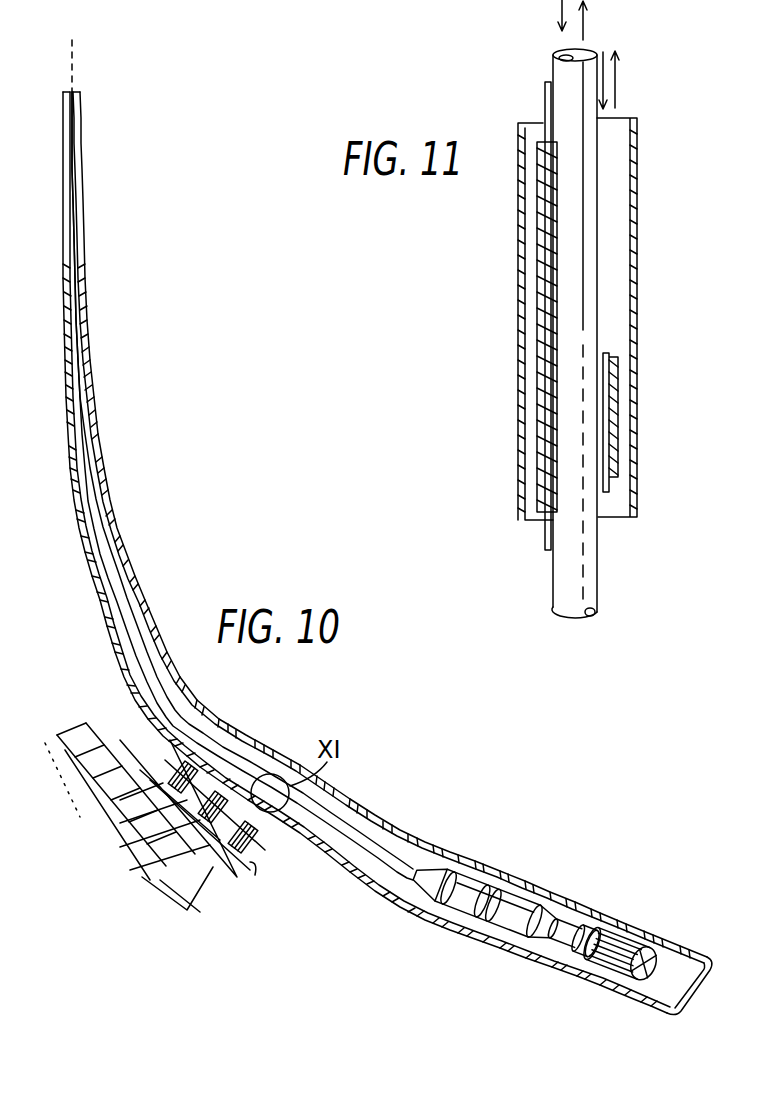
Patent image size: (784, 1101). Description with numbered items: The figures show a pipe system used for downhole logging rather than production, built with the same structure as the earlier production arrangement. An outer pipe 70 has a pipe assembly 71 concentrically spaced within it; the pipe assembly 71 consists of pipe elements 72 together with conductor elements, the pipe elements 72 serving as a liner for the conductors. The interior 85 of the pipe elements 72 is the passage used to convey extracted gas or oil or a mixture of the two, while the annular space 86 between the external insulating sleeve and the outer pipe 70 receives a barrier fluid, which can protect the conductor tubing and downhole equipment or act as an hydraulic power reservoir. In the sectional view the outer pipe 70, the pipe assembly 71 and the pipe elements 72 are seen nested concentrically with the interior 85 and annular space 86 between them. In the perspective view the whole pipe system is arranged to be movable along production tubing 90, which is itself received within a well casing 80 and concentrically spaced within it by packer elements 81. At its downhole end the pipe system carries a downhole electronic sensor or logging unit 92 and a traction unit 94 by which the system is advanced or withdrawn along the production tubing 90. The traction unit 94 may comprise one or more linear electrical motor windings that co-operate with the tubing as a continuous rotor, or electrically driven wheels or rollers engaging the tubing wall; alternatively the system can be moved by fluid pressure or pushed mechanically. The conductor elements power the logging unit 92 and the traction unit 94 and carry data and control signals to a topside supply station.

In FIG. 11, the outer pipe 70 is at (637, 305).
In FIG. 10, the outer pipe 70 is at (352, 843).
In FIG. 11, the pipe assembly 71 is at (529, 366).
In FIG. 11, the pipe elements 72 is at (565, 597).
In FIG. 10, the well casing 80 is at (187, 910).
In FIG. 10, the packer elements 81 is at (160, 873).
In FIG. 11, the interior 85 is at (568, 55).
In FIG. 11, the annular space 86 is at (622, 136).
In FIG. 10, the production tubing 90 is at (373, 893).
In FIG. 10, the downhole electronic sensor or logging unit 92 is at (612, 933).
In FIG. 10, the traction unit 94 is at (512, 910).